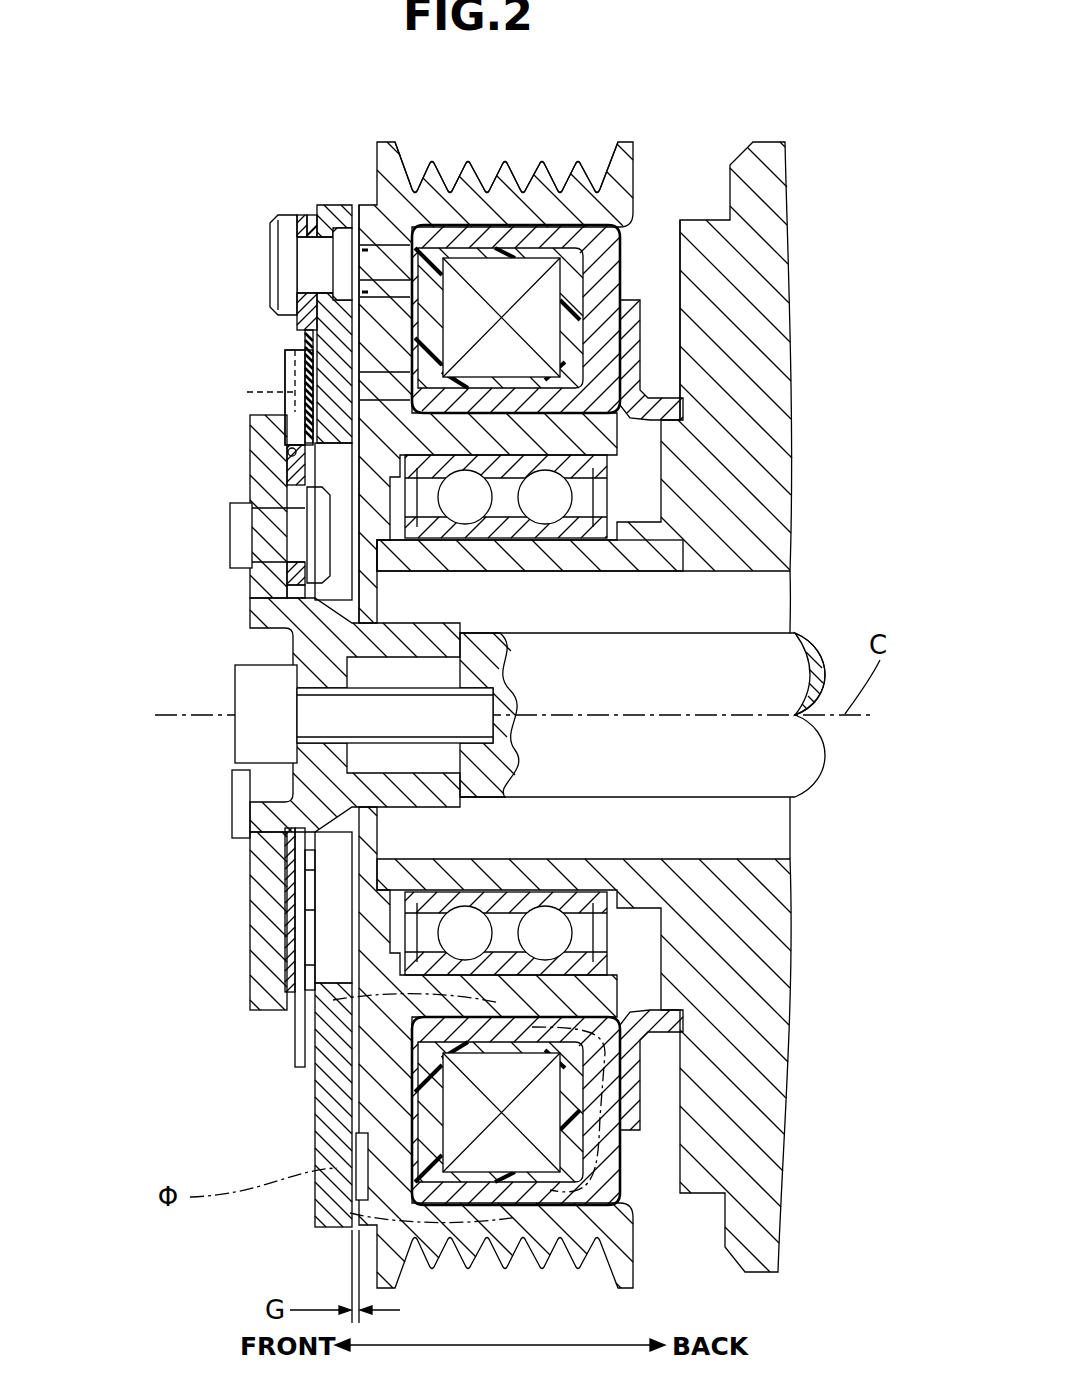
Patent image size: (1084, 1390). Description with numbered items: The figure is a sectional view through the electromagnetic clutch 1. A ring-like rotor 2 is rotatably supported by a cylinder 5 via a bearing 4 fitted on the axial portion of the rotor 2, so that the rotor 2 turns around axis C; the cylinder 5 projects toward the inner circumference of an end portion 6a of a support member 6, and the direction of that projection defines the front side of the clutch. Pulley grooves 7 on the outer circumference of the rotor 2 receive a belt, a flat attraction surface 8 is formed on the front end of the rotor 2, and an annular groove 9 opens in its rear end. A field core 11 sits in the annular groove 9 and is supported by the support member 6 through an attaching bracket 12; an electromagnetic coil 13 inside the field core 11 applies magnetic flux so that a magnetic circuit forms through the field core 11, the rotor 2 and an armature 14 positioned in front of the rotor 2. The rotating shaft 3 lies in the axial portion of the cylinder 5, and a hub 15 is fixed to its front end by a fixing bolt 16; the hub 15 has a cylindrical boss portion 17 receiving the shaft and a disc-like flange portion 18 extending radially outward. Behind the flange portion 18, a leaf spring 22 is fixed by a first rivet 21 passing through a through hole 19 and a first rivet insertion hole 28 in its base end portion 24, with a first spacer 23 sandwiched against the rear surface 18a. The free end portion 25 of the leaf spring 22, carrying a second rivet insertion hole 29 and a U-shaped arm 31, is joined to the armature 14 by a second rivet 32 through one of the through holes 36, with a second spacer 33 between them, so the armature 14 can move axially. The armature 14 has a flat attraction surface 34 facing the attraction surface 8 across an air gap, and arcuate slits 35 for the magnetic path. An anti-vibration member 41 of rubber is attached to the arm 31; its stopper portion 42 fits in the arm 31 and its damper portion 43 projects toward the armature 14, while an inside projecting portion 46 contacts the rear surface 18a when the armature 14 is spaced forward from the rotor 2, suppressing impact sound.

The electromagnetic clutch 1 is at (183, 137).
The rotor 2 is at (600, 146).
The rotating shaft 3 is at (723, 633).
The bearing 4 is at (547, 485).
The cylinder 5 is at (527, 550).
The support member 6 is at (796, 196).
The end portion 6a is at (690, 235).
The pulley grooves 7 is at (487, 192).
The attraction surface 8 is at (348, 212).
The annular groove 9 is at (621, 235).
The field core 11 is at (512, 224).
The attaching bracket 12 is at (660, 315).
The electromagnetic coil 13 is at (535, 333).
The armature 14 is at (322, 204).
The hub 15 is at (248, 918).
The fixing bolt 16 is at (235, 686).
The boss portion 17 is at (423, 800).
The flange portion 18 is at (262, 490).
The rear surface 18a is at (290, 455).
The through hole 19 is at (263, 552).
The first rivet 21 is at (232, 510).
The leaf spring 22 is at (297, 216).
The first spacer 23 is at (283, 575).
The base end portion 24 is at (305, 588).
The free end portion 25 is at (273, 225).
The first rivet insertion hole 28 is at (300, 530).
The second rivet insertion hole 29 is at (297, 257).
The arm 31 is at (247, 392).
The second rivet 32 is at (267, 238).
The second spacer 33 is at (305, 214).
The attraction surface 34 is at (360, 322).
The slits 35 is at (337, 1095).
The through holes 36 is at (322, 280).
The anti-vibration member 41 is at (280, 372).
The stopper portion 42 is at (285, 363).
The damper portion 43 is at (305, 327).
The inside projecting portion 46 is at (290, 438).